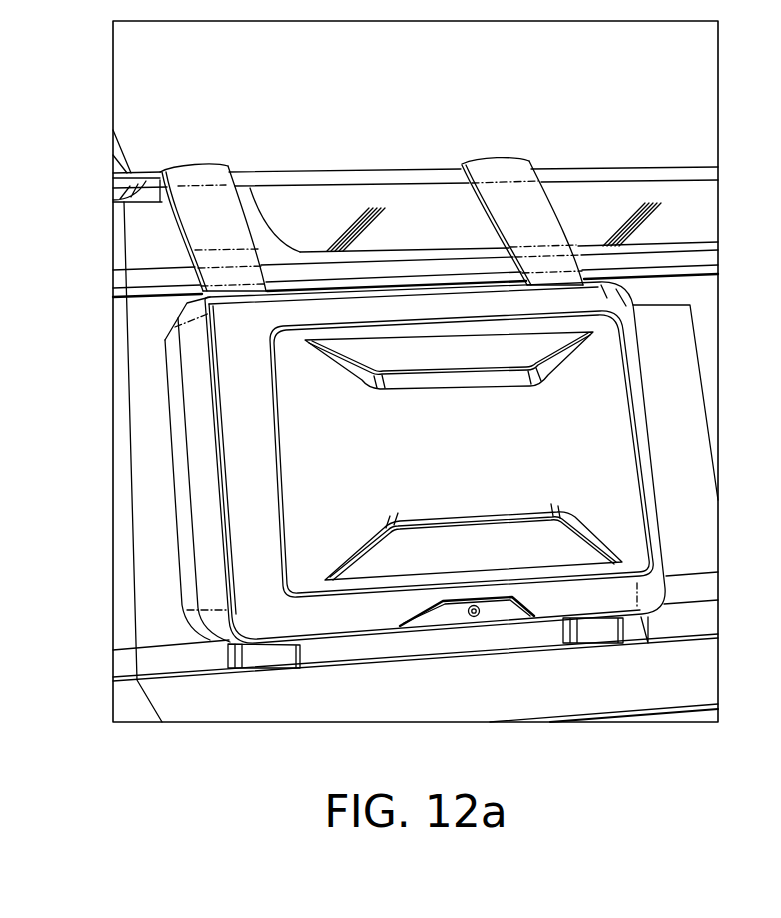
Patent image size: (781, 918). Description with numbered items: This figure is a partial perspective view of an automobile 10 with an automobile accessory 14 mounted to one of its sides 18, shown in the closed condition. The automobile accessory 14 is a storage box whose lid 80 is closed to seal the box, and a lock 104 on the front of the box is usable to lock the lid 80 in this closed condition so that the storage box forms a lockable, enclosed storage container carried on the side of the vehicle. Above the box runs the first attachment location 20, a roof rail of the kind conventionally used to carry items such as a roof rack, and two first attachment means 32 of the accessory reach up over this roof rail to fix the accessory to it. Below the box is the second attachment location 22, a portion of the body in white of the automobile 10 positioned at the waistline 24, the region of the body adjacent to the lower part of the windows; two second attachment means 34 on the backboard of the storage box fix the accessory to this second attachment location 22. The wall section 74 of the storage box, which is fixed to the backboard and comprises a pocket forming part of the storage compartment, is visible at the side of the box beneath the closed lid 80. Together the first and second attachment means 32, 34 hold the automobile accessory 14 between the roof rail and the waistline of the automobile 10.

The automobile 10 is at (369, 528).
The automobile accessory 14 is at (485, 148).
The sides 18 is at (167, 698).
The first attachment location 20 is at (674, 178).
The second attachment location 22 is at (270, 669).
The waistline 24 is at (700, 623).
The first attachment means 32 is at (194, 158).
The second attachment means 34 is at (596, 644).
The wall section 74 is at (173, 391).
The lid 80 is at (198, 450).
The lock 104 is at (480, 613).